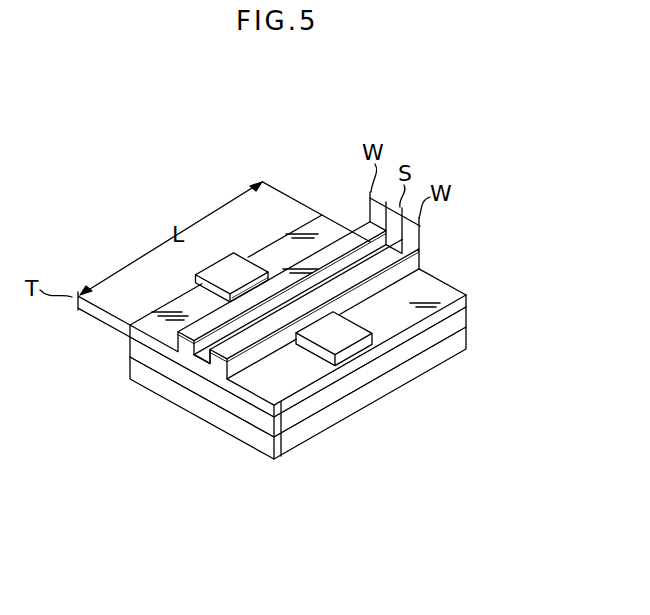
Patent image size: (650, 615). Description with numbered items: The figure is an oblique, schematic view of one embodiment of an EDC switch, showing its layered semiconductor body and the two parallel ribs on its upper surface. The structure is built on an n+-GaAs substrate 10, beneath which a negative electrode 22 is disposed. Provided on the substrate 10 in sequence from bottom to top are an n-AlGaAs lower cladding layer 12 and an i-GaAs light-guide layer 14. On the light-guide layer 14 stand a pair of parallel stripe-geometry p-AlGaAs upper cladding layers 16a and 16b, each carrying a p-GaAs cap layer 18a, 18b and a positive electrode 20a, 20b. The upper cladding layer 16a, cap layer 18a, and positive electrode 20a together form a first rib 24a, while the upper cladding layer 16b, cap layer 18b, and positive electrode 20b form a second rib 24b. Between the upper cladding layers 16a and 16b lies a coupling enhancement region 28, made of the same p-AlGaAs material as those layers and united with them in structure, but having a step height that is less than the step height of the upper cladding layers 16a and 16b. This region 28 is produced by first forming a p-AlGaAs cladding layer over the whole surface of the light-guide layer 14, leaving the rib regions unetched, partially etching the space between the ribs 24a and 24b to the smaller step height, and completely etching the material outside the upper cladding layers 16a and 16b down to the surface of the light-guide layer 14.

The n+-GaAs substrate 10 is at (467, 340).
The n-AlGaAs lower cladding layer 12 is at (467, 316).
The i-GaAs light-guide layer 14 is at (468, 295).
The p-AlGaAs upper cladding layer 16a is at (200, 358).
The p-GaAs cap layer 18a is at (187, 348).
The positive electrode 20a is at (176, 334).
The first rib 24a is at (221, 365).
The p-AlGaAs upper cladding layer 16b is at (214, 370).
The p-GaAs cap layer 18b is at (250, 355).
The positive electrode 20b is at (266, 334).
The second rib 24b is at (314, 408).
The coupling enhancement region 28 is at (204, 366).
The negative electrode 22 is at (392, 396).